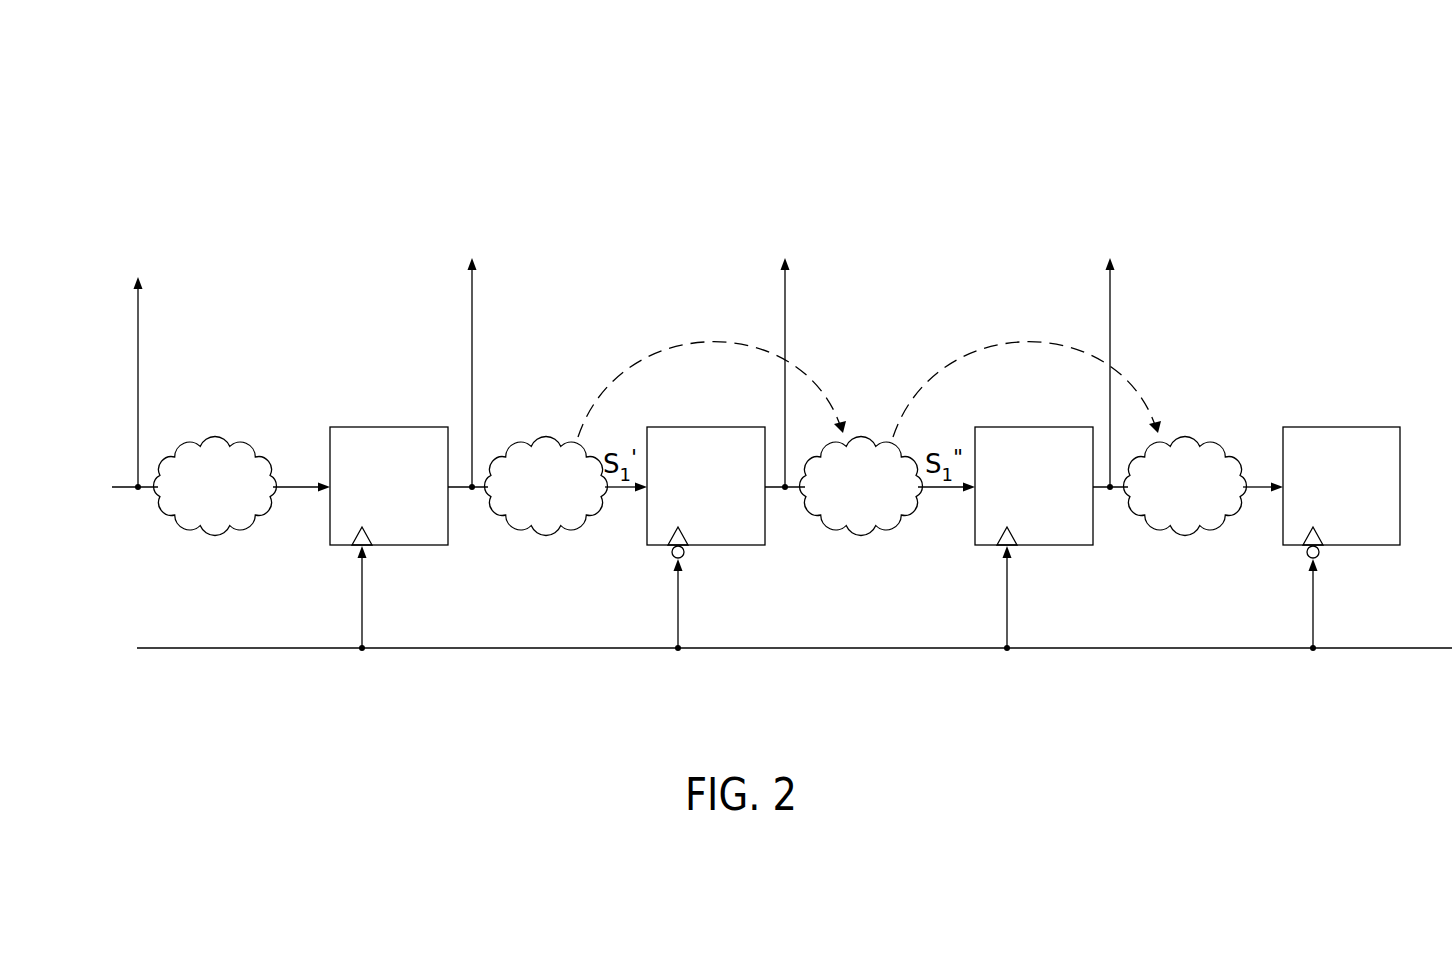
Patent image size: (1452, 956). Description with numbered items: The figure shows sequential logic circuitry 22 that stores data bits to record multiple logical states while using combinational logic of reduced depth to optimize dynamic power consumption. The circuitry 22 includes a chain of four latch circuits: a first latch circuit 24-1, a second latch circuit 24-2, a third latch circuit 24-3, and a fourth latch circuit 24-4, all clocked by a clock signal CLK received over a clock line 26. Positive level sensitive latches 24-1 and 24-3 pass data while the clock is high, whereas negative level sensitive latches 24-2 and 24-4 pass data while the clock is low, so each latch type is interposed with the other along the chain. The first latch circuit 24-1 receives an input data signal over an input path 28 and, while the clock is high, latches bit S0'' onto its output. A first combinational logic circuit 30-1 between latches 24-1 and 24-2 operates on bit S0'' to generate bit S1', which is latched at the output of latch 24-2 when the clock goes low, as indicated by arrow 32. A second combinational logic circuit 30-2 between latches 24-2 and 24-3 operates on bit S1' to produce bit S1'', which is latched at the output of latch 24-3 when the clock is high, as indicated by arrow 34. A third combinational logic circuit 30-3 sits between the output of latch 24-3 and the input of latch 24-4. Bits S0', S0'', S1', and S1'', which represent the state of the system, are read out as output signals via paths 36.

The sequential logic circuitry 22 is at (289, 104).
The first latch circuit 24-1 is at (377, 427).
The second latch circuit 24-2 is at (703, 427).
The third latch circuit 24-3 is at (1030, 427).
The fourth latch circuit 24-4 is at (1340, 427).
The clock line 26 is at (523, 650).
The input path 28 is at (310, 493).
The first combinational logic circuit 30-1 is at (556, 447).
The second combinational logic circuit 30-2 is at (872, 447).
The third combinational logic circuit 30-3 is at (1197, 447).
The arrow 32 is at (703, 343).
The arrow 34 is at (1018, 343).
The paths 36 is at (472, 305).